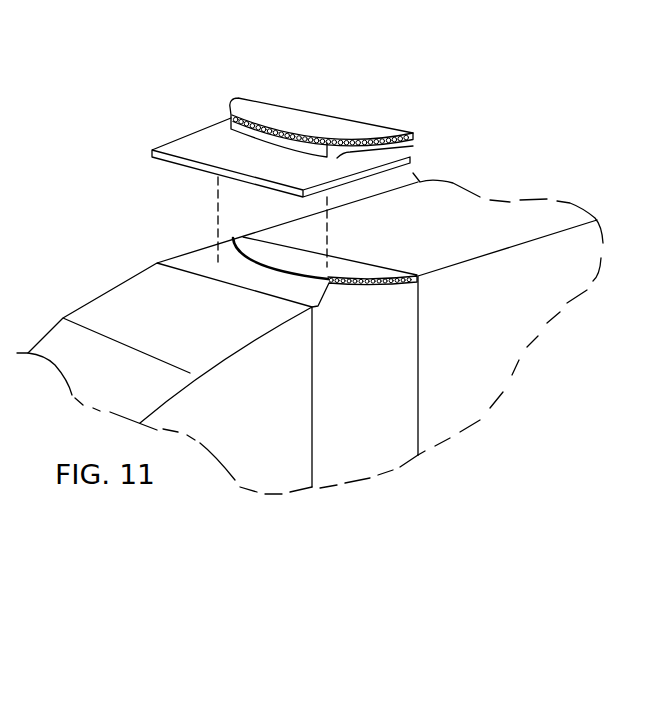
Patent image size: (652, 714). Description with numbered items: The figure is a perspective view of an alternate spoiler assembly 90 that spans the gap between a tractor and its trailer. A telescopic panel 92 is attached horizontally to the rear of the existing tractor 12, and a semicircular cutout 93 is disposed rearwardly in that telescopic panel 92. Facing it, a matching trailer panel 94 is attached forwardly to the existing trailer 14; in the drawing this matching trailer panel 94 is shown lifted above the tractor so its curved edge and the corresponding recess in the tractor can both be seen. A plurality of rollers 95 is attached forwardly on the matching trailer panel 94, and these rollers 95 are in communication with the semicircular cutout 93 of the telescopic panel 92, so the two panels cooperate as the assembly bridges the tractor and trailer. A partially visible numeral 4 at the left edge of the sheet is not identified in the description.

The alternate spoiler assembly 90 is at (211, 97).
The telescopic panel 92 is at (173, 161).
The semicircular cutout 93 is at (417, 144).
The matching trailer panel 94 is at (411, 134).
The rollers 95 is at (278, 119).
The existing tractor 12 is at (58, 333).
The existing trailer 14 is at (535, 313).
The partial numeral 4 is at (7, 81).